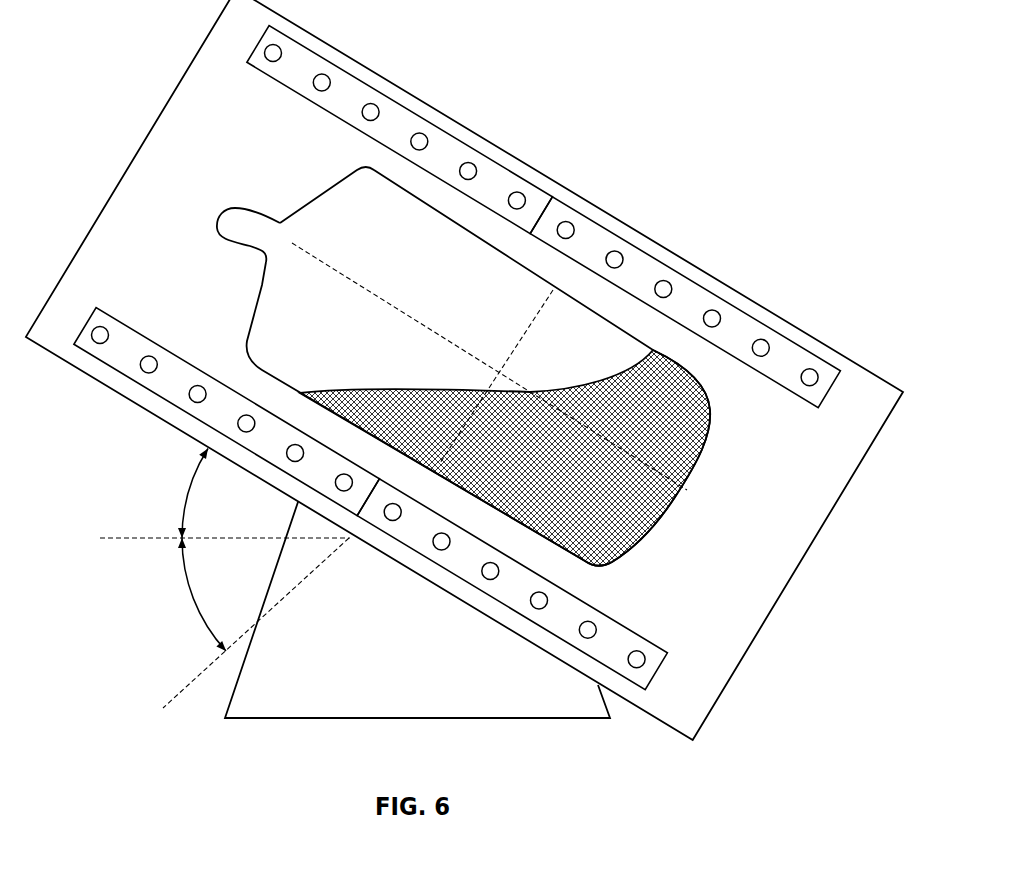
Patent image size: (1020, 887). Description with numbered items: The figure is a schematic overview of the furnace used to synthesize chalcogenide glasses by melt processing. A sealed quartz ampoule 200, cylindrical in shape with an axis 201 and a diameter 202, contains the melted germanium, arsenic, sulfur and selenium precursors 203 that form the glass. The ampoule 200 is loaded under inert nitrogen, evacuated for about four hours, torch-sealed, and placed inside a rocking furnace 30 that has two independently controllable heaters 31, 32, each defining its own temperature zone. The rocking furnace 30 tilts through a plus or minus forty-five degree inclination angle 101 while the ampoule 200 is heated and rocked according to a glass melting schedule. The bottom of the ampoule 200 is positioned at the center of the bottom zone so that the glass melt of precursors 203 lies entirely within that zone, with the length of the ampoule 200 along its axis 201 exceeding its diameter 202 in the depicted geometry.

The rocking furnace 30 is at (572, 180).
The first heater 31 is at (452, 148).
The second heater 32 is at (690, 292).
The sealed quartz ampoule 200 is at (320, 192).
The axis 201 is at (310, 257).
The diameter 202 is at (527, 334).
The melted GexAsyS(100-x-y-z)Sez precursors 203 is at (612, 512).
The inclination angle 101 is at (177, 502).